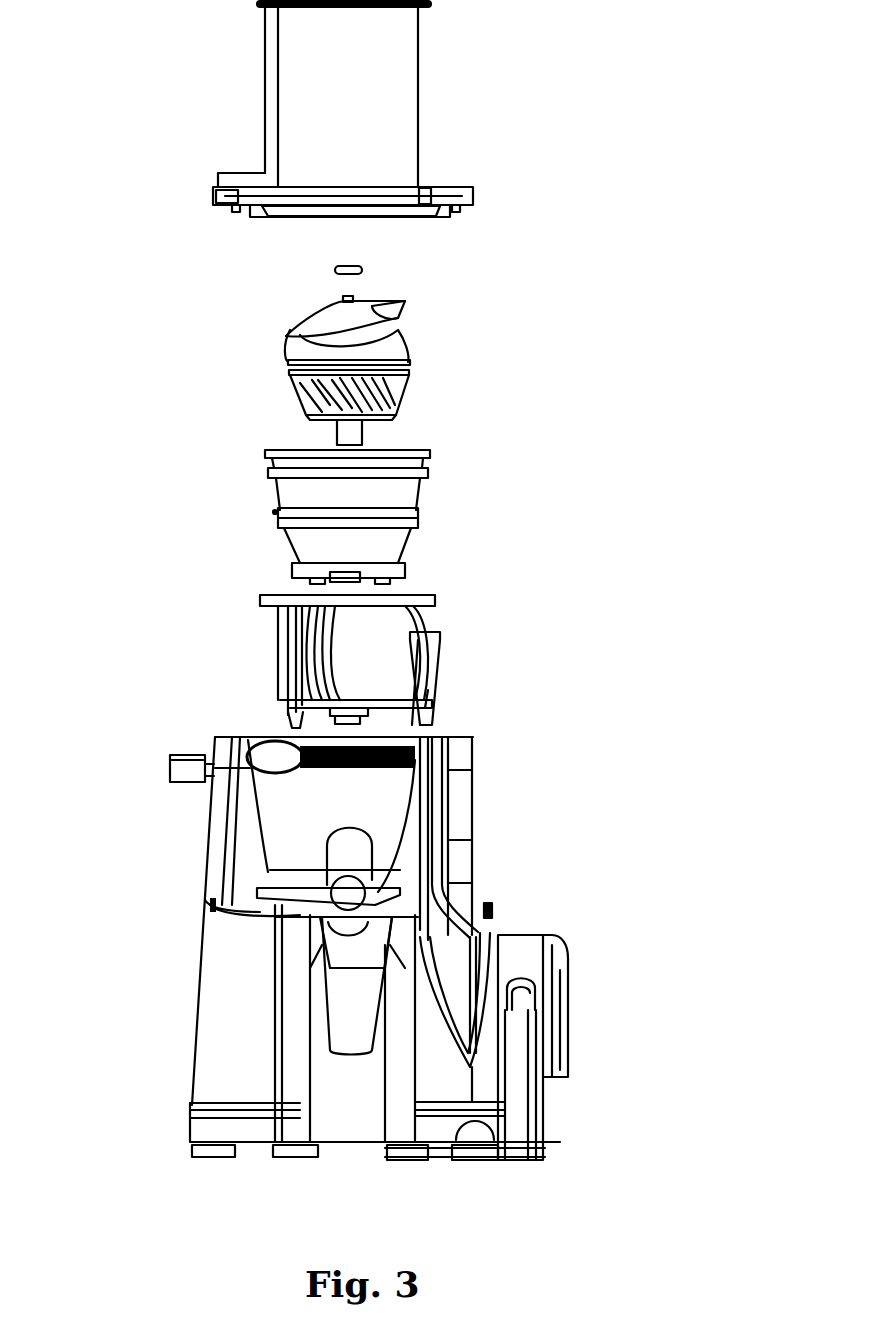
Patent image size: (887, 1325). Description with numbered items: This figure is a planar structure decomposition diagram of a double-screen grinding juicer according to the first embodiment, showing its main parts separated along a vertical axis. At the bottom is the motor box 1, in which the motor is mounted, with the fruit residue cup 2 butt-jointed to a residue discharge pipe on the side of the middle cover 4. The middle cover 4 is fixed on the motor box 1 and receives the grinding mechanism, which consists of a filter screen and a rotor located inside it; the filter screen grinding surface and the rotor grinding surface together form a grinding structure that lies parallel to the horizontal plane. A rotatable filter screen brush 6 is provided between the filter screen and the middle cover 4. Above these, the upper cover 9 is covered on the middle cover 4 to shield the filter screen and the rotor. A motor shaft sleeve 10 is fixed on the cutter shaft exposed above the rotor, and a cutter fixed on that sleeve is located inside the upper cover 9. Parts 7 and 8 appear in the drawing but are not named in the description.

The motor box 1 is at (220, 1007).
The fruit residue cup 2 is at (333, 1075).
The middle cover 4 is at (297, 823).
The filter screen brush 6 is at (418, 658).
The filter 7 is at (418, 511).
The screw auger 8 is at (410, 362).
The upper cover 9 is at (379, 94).
The motor shaft sleeve 10 is at (362, 270).